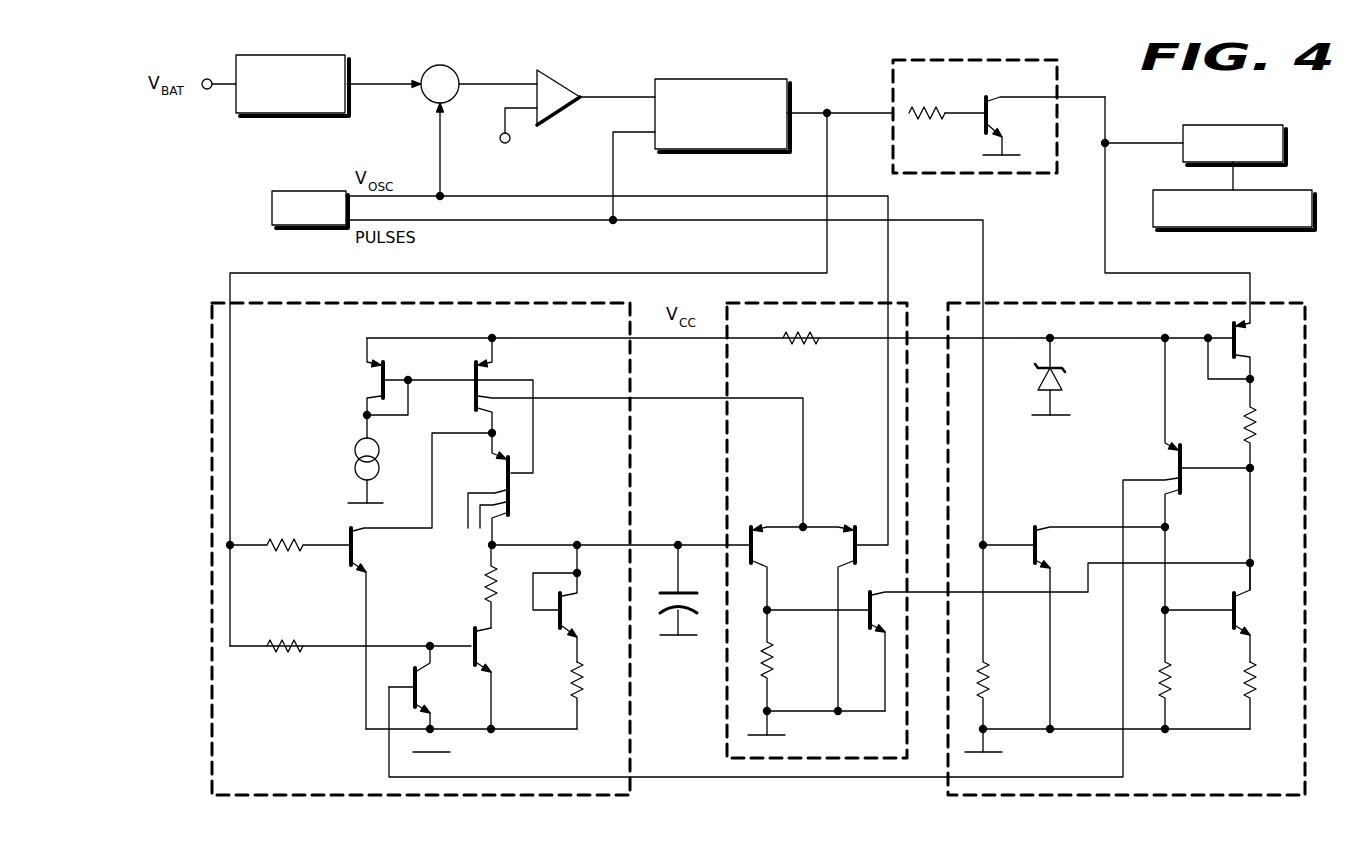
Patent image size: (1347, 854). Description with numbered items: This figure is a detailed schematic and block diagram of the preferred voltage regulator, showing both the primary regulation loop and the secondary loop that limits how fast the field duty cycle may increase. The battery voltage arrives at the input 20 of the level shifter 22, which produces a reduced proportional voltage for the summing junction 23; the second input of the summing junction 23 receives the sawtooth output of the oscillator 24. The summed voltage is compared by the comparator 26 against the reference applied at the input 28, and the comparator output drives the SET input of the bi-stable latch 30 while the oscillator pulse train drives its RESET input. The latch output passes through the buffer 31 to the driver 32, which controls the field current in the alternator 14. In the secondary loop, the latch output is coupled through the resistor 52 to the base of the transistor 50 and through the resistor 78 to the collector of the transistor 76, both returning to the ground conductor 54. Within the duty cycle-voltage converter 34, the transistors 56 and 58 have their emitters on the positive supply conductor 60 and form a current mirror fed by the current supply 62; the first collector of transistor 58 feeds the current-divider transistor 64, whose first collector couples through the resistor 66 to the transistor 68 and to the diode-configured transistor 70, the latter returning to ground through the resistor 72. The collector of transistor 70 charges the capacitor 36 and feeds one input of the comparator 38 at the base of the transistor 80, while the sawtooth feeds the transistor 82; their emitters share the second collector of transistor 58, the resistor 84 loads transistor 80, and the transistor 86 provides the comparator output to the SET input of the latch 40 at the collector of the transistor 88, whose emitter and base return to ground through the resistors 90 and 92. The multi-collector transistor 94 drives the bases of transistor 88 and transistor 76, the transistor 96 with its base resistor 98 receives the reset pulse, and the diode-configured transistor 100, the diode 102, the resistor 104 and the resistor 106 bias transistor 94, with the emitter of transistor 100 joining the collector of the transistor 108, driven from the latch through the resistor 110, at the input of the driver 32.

The alternator 14 is at (1302, 190).
The input 20 is at (209, 79).
The level shifter 22 is at (262, 115).
The summing junction 23 is at (454, 71).
The oscillator 24 is at (272, 216).
The comparator 26 is at (560, 83).
The input 28 is at (502, 143).
The bi-stable latch 30 is at (750, 79).
The buffer 31 is at (893, 90).
The driver 32 is at (1284, 135).
The duty cycle-voltage converter 34 is at (290, 776).
The capacitor 36 is at (688, 590).
The comparator 38 is at (726, 452).
The latch 40 is at (1248, 776).
The transistor 50 is at (360, 553).
The resistor 52 is at (287, 538).
The power supply conductor 54 is at (1018, 152).
The transistor 56 is at (378, 380).
The transistor 58 is at (474, 392).
The power supply conductor 60 is at (580, 340).
The current supply 62 is at (356, 452).
The transistor 64 is at (512, 496).
The resistor 66 is at (497, 584).
The transistor 68 is at (485, 655).
The diode-configured transistor 70 is at (570, 606).
The resistor 72 is at (571, 690).
The transistor 76 is at (425, 690).
The resistor 78 is at (287, 640).
The transistor 80 is at (760, 550).
The transistor 82 is at (845, 550).
The resistor 84 is at (764, 658).
The transistor 86 is at (866, 632).
The transistor 88 is at (1244, 603).
The resistor 90 is at (1247, 690).
The resistor 92 is at (1160, 676).
The transistor 94 is at (1186, 488).
The transistor 96 is at (1031, 533).
The resistor 98 is at (980, 670).
The diode configured transistor 100 is at (1240, 342).
The diode 102 is at (1064, 381).
The resistor 104 is at (806, 331).
The resistor 106 is at (1243, 426).
The transistor 108 is at (981, 106).
The resistor 110 is at (927, 123).